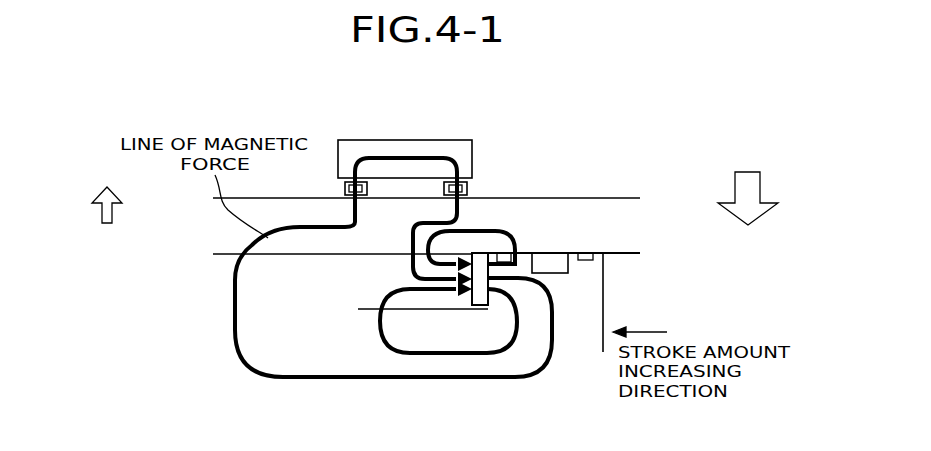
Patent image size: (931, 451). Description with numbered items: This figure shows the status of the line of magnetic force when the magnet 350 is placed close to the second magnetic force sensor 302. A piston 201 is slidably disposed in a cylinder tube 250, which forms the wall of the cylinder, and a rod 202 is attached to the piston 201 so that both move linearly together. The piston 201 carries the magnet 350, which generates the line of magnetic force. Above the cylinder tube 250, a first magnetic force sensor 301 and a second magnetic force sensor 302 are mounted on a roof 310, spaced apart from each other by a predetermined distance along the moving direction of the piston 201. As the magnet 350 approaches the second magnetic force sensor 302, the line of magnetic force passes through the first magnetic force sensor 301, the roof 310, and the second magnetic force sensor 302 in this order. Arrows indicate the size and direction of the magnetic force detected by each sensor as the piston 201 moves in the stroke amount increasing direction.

The piston 201 is at (590, 280).
The rod 202 is at (374, 320).
The cylinder tube 250 is at (588, 210).
The first magnetic force sensor 301 is at (340, 187).
The second magnetic force sensor 302 is at (470, 186).
The roof 310 is at (408, 150).
The magnet 350 is at (480, 295).